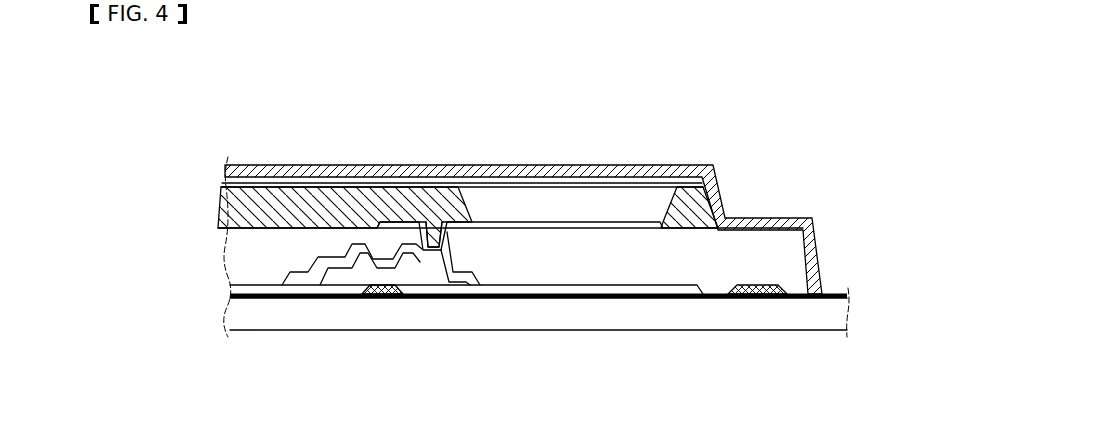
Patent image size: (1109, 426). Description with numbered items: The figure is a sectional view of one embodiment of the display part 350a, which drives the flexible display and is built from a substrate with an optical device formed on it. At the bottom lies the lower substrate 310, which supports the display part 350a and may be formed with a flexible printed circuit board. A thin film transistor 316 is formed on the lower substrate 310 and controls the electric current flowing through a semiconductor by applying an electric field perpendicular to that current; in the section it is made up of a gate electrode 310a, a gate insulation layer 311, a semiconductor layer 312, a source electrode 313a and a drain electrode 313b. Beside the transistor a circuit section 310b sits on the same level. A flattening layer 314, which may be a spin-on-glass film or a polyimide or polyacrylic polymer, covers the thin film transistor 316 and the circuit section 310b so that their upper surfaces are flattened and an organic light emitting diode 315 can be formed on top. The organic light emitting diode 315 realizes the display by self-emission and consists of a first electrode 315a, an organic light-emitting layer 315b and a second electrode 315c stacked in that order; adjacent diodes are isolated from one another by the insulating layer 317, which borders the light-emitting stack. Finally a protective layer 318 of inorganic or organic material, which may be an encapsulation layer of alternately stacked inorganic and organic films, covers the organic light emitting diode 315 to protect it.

The lower substrate 310 is at (835, 313).
The gate insulation layer 311 is at (611, 293).
The gate electrode 310a is at (383, 294).
The circuit section 310b is at (756, 294).
The semiconductor layer 312 is at (428, 276).
The source electrode 313a is at (296, 278).
The drain electrode 313b is at (460, 277).
The thin film transistor 316 is at (507, 379).
The flattening layer 314 is at (238, 257).
The organic light emitting diode 315 is at (502, 97).
The first electrode 315a is at (507, 226).
The organic light-emitting layer 315b is at (565, 207).
The second electrode 315c is at (648, 180).
The insulating layer 317 is at (225, 200).
The protective layer 318 is at (225, 170).
The display part 350a is at (753, 123).